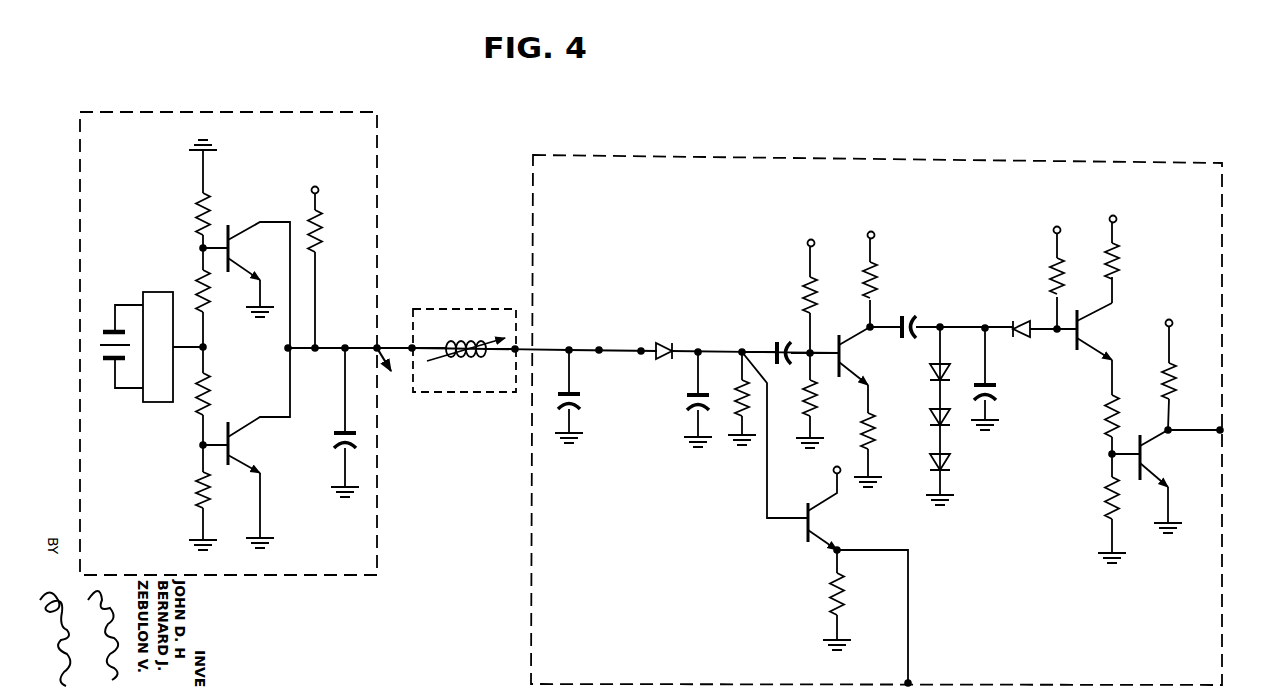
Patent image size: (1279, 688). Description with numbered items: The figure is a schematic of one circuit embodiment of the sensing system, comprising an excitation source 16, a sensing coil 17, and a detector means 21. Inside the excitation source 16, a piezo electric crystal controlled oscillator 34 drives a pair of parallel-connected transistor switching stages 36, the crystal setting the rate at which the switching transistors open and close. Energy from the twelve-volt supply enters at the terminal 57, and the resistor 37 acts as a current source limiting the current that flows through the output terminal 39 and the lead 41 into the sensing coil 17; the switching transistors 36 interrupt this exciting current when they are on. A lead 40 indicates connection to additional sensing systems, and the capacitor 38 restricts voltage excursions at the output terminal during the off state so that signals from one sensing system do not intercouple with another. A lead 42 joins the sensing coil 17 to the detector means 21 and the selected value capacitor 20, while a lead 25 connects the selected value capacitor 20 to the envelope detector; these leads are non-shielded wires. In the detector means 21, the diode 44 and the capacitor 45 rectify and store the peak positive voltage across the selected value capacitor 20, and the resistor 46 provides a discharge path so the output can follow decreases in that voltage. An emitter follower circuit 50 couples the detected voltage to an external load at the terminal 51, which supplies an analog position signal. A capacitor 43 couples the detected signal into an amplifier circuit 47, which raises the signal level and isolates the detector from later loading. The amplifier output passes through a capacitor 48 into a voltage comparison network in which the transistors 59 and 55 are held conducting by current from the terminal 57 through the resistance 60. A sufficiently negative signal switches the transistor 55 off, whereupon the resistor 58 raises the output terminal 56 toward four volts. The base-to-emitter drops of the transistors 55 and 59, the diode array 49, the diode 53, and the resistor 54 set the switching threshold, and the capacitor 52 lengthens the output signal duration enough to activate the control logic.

The excitation source 16 is at (380, 140).
The sensing coil 17 is at (461, 356).
The selected value capacitor 20 is at (577, 400).
The detector means 21 is at (610, 155).
The lead 25 is at (619, 349).
The piezo electric crystal controlled oscillator 34 is at (114, 294).
The transistor switching stages 36 is at (239, 220).
The resistor 37 is at (324, 232).
The capacitor 38 is at (339, 434).
The excitation source output terminal 39 is at (376, 347).
The lead 40 is at (393, 376).
The lead 41 is at (405, 346).
The lead 42 is at (525, 349).
The capacitor 43 is at (776, 342).
The diode 44 is at (662, 343).
The capacitor 45 is at (690, 395).
The resistor 46 is at (737, 386).
The amplifier circuit 47 is at (845, 285).
The capacitor 48 is at (909, 296).
The diode array 49 is at (930, 373).
The emitter follower circuit 50 is at (852, 534).
The terminal 51 is at (912, 682).
The capacitor 52 is at (991, 390).
The diode 53 is at (1019, 324).
The resistor 54 is at (1106, 412).
The transistor 55 is at (1150, 460).
The output terminal 56 is at (1222, 430).
The terminal 57 is at (1061, 236).
The resistor 58 is at (1162, 386).
The transistor 59 is at (1084, 333).
The resistance 60 is at (1051, 272).